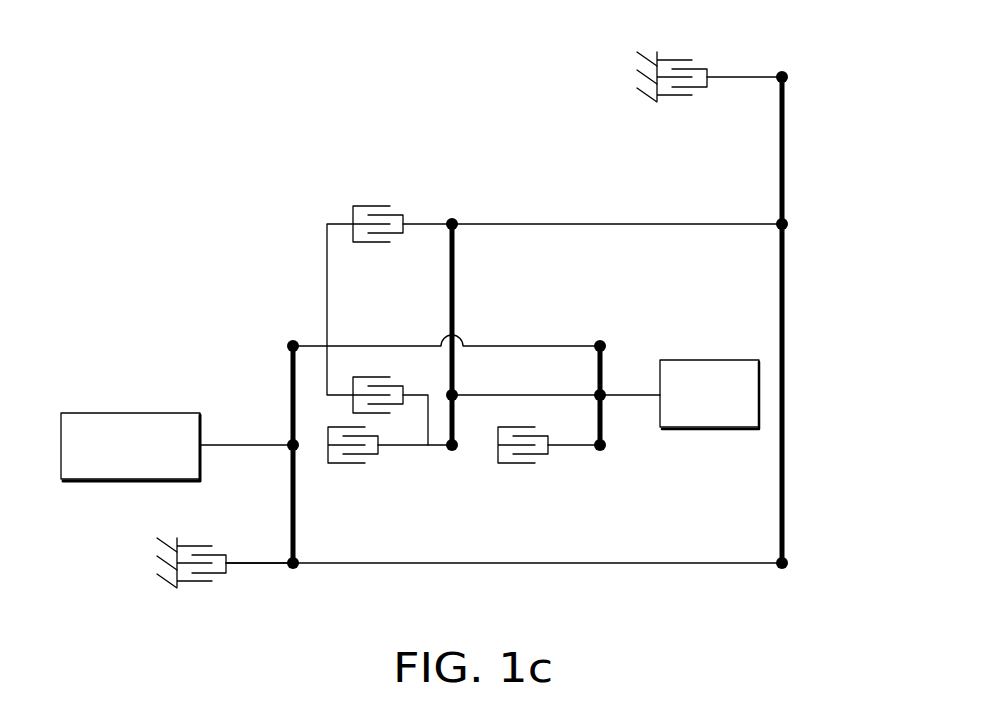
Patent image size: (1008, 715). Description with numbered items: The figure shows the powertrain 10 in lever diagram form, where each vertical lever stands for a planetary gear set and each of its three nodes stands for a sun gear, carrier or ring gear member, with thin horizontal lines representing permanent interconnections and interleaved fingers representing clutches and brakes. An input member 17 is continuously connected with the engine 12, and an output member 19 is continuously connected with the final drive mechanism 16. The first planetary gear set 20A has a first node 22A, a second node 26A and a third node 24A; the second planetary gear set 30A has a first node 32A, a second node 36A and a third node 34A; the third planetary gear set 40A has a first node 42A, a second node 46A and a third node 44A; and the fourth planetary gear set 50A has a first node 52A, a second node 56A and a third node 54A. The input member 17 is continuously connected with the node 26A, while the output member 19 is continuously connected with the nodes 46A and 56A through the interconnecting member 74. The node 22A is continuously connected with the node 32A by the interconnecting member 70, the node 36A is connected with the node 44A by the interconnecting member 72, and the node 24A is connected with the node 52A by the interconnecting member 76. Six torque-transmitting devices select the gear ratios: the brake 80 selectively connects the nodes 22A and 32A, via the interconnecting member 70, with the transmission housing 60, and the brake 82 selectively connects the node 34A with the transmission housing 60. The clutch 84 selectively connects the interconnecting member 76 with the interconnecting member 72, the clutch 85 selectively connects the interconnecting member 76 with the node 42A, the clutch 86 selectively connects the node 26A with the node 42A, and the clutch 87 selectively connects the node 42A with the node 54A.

The powertrain 10 is at (321, 100).
The engine 12 is at (120, 392).
The final drive mechanism 16 is at (710, 352).
The input member 17 is at (222, 443).
The output member 19 is at (637, 398).
The first planetary gear set 20A is at (292, 333).
The first node 22A is at (297, 560).
The third node 24A is at (289, 346).
The second node 26A is at (289, 445).
The second planetary gear set 30A is at (783, 60).
The first node 32A is at (785, 566).
The third node 34A is at (785, 78).
The second node 36A is at (785, 225).
The third planetary gear set 40A is at (453, 208).
The first node 42A is at (451, 451).
The third node 44A is at (456, 229).
The second node 46A is at (456, 392).
The fourth planetary gear set 50A is at (598, 336).
The first node 52A is at (604, 345).
The third node 54A is at (599, 451).
The second node 56A is at (597, 392).
The transmission housing 60 is at (163, 586).
The interconnecting member 70 is at (523, 567).
The interconnecting member 72 is at (631, 222).
The interconnecting member 74 is at (484, 398).
The interconnecting member 76 is at (491, 344).
The brake 80 is at (239, 548).
The brake 82 is at (712, 50).
The clutch 84 is at (380, 198).
The clutch 85 is at (403, 375).
The clutch 86 is at (382, 467).
The clutch 87 is at (546, 467).